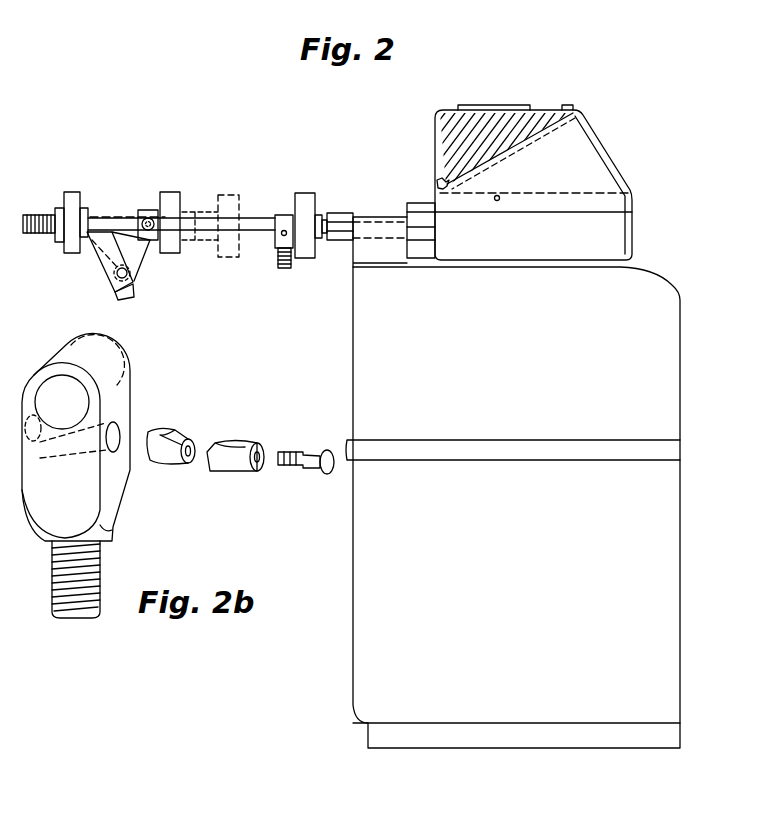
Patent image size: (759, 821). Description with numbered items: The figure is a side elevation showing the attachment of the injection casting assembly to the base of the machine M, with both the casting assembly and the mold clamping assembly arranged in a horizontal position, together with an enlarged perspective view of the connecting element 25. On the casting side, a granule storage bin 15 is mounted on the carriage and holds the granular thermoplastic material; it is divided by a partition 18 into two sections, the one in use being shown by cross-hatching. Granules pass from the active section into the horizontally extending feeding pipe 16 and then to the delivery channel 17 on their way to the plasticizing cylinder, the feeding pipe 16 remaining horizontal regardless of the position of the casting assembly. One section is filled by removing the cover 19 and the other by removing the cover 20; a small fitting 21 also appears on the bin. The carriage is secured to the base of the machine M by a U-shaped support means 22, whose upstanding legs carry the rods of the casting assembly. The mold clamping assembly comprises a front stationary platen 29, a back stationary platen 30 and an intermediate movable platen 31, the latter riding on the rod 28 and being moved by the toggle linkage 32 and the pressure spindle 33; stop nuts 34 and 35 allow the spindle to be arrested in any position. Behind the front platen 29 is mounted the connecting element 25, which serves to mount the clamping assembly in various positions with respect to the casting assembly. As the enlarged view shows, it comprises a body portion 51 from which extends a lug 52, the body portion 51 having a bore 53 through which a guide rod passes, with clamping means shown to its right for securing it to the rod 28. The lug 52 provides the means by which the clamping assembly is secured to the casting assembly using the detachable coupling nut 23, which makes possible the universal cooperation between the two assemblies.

In FIG. 2, the granule storage bin 15 is at (577, 108).
In FIG. 2, the feeding pipe 16 is at (437, 181).
In FIG. 2, the delivery channel 17 is at (422, 185).
In FIG. 2, the partition 18 is at (516, 146).
In FIG. 2, the cover 19 is at (481, 105).
In FIG. 2, the cover 20 is at (604, 143).
In FIG. 2, the pivot 21 is at (496, 202).
In FIG. 2, the U-shaped support means 22 is at (366, 257).
In FIG. 2, the coupling nut 23 is at (343, 213).
In FIG. 2, the connecting element 25 is at (273, 246).
In FIG. 2B, the connecting element 25 is at (178, 475).
In FIG. 2, the rod 28 is at (252, 222).
In FIG. 2, the front stationary platen 29 is at (305, 204).
In FIG. 2, the back stationary platen 30 is at (72, 210).
In FIG. 2, the intermediate movable platen 31 is at (170, 201).
In FIG. 2, the toggle linkage 32 is at (98, 250).
In FIG. 2, the pressure spindle 33 is at (36, 234).
In FIG. 2, the stop nut 34 is at (58, 209).
In FIG. 2, the stop nut 35 is at (88, 210).
In FIG. 2, the body portion 51 is at (283, 214).
In FIG. 2B, the body portion 51 is at (115, 500).
In FIG. 2, the lug 52 is at (287, 269).
In FIG. 2B, the lug 52 is at (102, 573).
In FIG. 2B, the bore 53 is at (70, 412).
In FIG. 2, the machine M is at (397, 675).